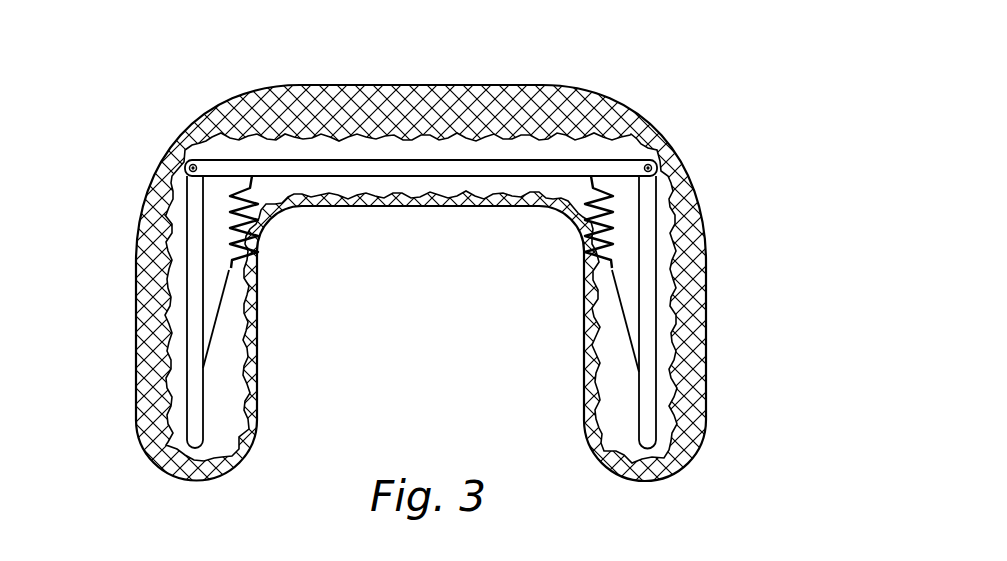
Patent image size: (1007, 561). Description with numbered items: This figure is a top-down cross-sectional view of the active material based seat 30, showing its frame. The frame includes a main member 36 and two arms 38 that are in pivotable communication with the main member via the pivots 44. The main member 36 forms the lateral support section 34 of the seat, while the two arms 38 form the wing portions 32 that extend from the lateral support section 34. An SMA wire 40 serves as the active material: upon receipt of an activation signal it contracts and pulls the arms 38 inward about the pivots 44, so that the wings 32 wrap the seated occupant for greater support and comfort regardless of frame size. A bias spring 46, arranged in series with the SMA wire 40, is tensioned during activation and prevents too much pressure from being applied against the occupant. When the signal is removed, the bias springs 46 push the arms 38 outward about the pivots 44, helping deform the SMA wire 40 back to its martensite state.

The active material based seat 30 is at (118, 84).
The wing portions 32 is at (693, 333).
The lateral support section 34 is at (421, 106).
The main member 36 is at (428, 176).
The arms 38 is at (190, 298).
The SMA wire 40 is at (625, 315).
The pivot 44 is at (652, 168).
The bias spring 46 is at (258, 225).